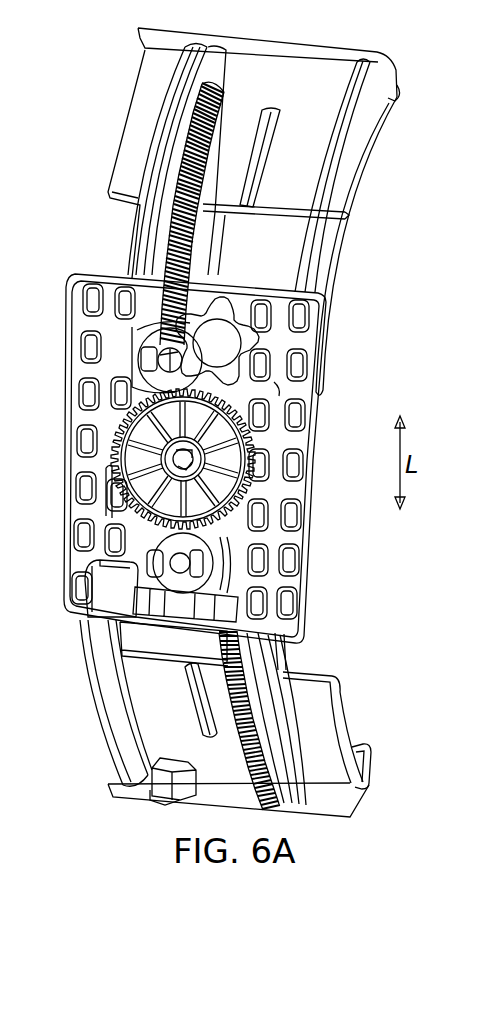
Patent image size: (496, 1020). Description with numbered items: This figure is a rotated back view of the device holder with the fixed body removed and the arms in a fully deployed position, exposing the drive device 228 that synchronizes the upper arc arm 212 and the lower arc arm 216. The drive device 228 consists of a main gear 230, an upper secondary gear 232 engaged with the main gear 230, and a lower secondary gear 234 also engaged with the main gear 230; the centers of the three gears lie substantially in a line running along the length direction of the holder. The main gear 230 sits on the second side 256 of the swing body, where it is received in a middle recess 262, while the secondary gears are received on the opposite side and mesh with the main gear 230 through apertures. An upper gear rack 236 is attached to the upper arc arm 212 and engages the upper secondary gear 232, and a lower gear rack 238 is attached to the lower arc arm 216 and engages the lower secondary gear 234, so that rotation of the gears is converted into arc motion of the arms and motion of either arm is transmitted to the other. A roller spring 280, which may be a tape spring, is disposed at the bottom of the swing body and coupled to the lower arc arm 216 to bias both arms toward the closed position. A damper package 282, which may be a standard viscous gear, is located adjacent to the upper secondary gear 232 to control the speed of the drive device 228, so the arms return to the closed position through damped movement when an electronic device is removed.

The upper arc arm 212 is at (372, 155).
The lower arc arm 216 is at (347, 718).
The drive device 228 is at (97, 447).
The main gear 230 is at (248, 463).
The upper secondary gear 232 is at (140, 354).
The lower secondary gear 234 is at (203, 562).
The upper gear rack 236 is at (196, 243).
The lower gear rack 238 is at (219, 653).
The second side 256 is at (279, 390).
The middle recess 262 is at (103, 432).
The roller spring 280 is at (100, 574).
The damper package 282 is at (240, 343).